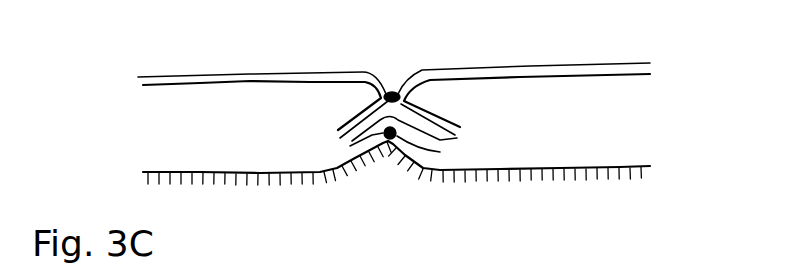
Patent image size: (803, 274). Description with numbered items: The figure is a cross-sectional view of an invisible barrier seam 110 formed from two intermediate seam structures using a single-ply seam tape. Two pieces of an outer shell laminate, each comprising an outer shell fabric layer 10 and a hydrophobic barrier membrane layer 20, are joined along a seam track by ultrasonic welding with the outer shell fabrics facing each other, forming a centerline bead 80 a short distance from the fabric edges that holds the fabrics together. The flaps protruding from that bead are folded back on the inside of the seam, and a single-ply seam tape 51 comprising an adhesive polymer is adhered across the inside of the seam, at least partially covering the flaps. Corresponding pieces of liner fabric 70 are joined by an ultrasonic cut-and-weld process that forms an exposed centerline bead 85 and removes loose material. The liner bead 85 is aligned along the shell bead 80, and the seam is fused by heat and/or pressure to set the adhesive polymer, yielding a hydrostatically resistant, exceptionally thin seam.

The outer shell fabric layer 10 is at (185, 70).
The hydrophobic barrier membrane layer 20 is at (198, 87).
The single-ply seam tape 51 is at (350, 146).
The liner fabric 70 is at (566, 190).
The centerline bead 80 is at (393, 82).
The centerline bead 85 is at (440, 152).
The invisible barrier seam 110 is at (752, 140).